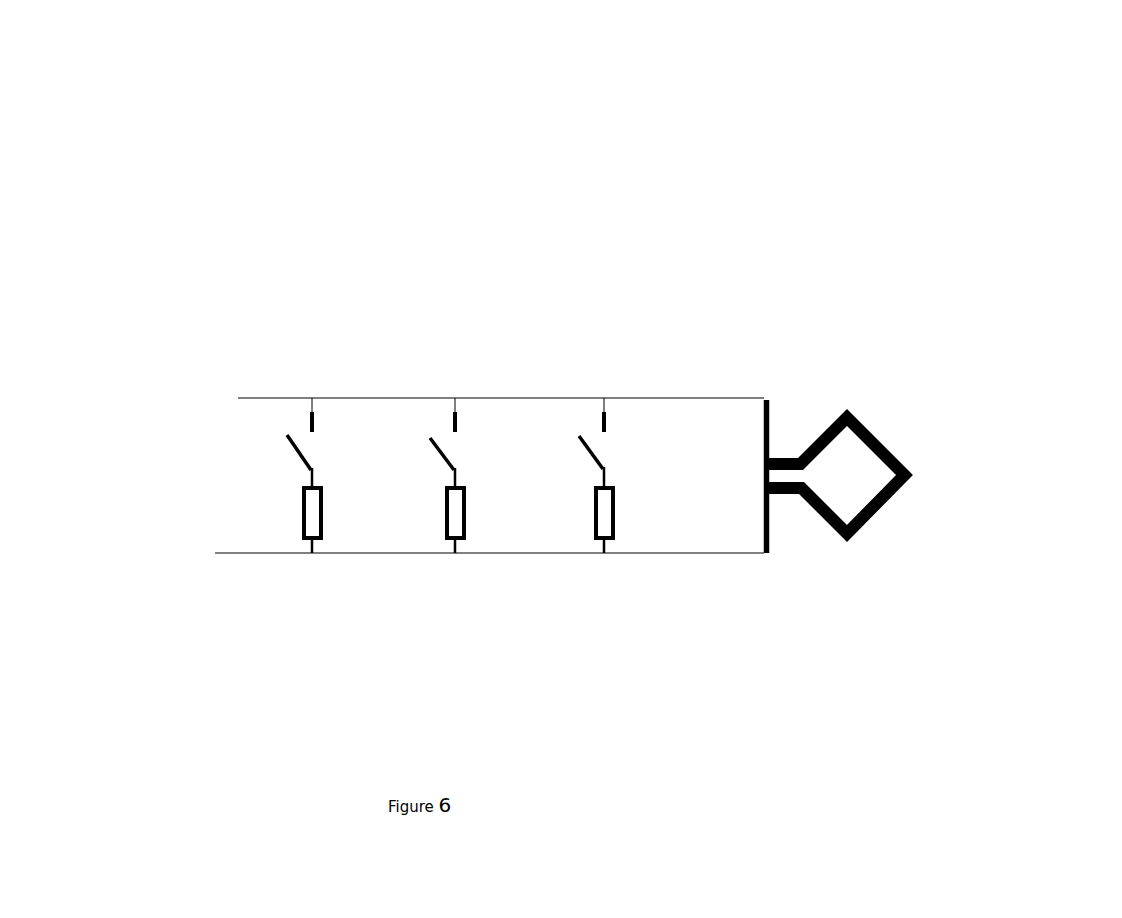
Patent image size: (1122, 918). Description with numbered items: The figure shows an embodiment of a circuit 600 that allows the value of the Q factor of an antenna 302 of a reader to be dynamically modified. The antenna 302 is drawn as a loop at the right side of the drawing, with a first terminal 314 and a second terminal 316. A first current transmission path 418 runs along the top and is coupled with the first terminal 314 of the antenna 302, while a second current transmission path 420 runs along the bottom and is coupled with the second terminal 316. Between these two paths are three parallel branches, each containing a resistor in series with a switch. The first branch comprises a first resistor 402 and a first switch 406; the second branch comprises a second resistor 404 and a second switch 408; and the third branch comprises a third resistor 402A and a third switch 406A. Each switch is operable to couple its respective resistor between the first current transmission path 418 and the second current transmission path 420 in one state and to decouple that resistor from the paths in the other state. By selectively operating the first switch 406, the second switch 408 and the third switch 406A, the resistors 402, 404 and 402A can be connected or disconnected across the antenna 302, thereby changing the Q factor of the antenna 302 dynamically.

The circuit 600 is at (1010, 122).
The first current transmission path 418 is at (240, 415).
The second current transmission path 420 is at (212, 543).
The third switch 406A is at (312, 471).
The third resistor 402A is at (322, 528).
The second switch 408 is at (465, 469).
The second resistor 404 is at (465, 510).
The first switch 406 is at (608, 463).
The first resistor 402 is at (615, 503).
The first terminal 314 is at (770, 415).
The second terminal 316 is at (769, 553).
The antenna 302 is at (883, 513).